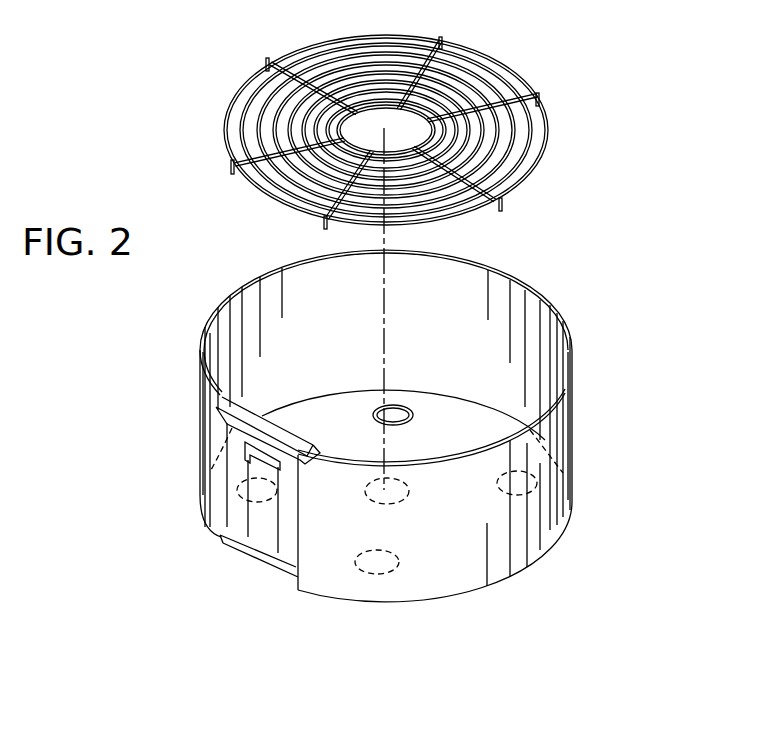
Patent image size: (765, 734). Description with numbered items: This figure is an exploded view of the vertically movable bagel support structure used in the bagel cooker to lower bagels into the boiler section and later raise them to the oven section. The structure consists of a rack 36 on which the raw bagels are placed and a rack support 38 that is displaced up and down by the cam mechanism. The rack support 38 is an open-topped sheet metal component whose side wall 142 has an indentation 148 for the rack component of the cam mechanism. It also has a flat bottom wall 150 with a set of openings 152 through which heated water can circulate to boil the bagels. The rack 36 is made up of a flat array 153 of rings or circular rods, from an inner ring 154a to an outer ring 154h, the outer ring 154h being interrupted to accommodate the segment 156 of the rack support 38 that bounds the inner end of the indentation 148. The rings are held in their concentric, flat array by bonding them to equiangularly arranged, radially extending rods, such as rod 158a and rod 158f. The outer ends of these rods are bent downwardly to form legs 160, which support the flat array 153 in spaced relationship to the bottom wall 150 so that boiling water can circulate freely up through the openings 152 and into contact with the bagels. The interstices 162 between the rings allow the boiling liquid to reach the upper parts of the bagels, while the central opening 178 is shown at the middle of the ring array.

The rack 36 is at (592, 125).
The rack support 38 is at (594, 408).
The side wall 142 is at (576, 484).
The indentation 148 is at (226, 406).
The bottom wall 150 is at (358, 388).
The openings 152 is at (391, 332).
The flat array 153 is at (290, 46).
The ring 154a is at (443, 73).
The outer ring 154h is at (530, 83).
The segment 156 is at (290, 413).
The radially extending rod 158a is at (246, 140).
The radially extending rod 158f is at (321, 213).
The legs 160 is at (233, 167).
The interstices 162 is at (507, 130).
The central opening 178 is at (377, 118).